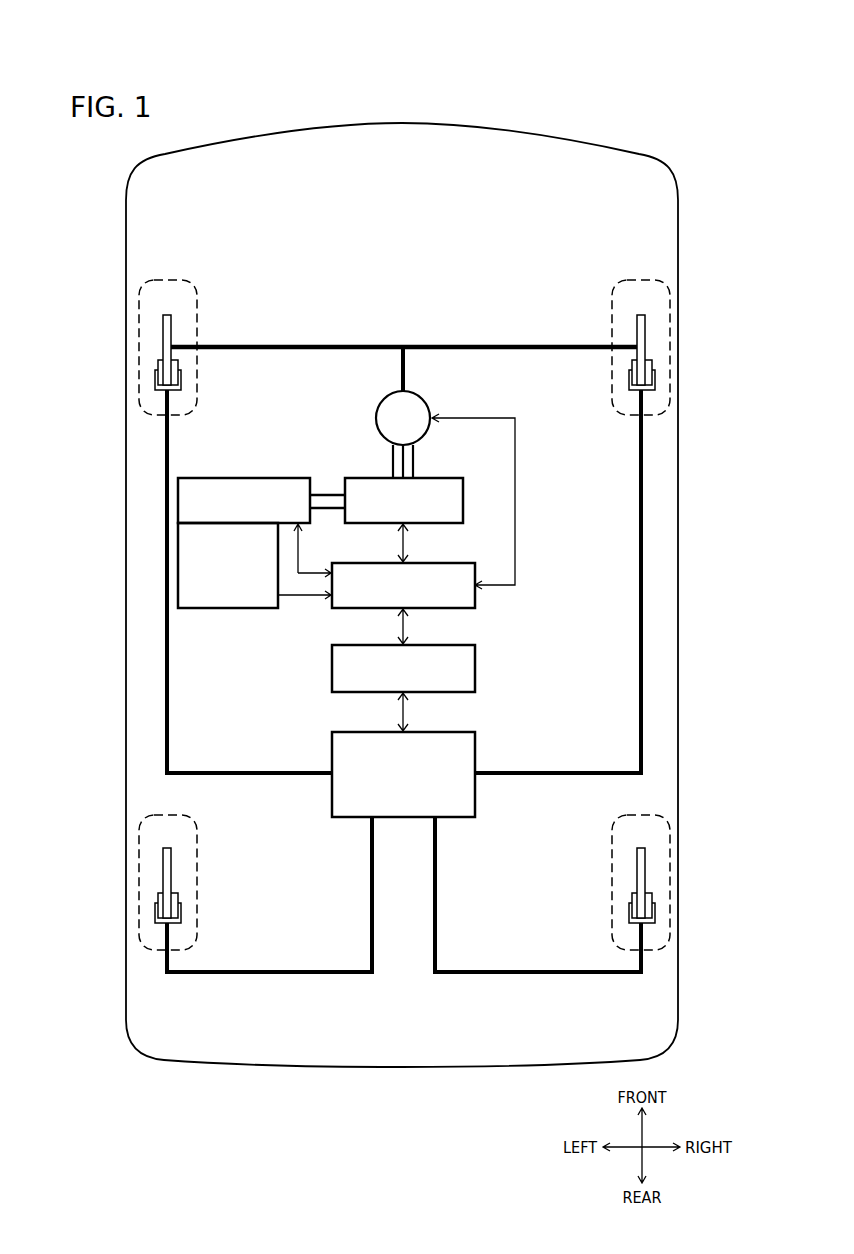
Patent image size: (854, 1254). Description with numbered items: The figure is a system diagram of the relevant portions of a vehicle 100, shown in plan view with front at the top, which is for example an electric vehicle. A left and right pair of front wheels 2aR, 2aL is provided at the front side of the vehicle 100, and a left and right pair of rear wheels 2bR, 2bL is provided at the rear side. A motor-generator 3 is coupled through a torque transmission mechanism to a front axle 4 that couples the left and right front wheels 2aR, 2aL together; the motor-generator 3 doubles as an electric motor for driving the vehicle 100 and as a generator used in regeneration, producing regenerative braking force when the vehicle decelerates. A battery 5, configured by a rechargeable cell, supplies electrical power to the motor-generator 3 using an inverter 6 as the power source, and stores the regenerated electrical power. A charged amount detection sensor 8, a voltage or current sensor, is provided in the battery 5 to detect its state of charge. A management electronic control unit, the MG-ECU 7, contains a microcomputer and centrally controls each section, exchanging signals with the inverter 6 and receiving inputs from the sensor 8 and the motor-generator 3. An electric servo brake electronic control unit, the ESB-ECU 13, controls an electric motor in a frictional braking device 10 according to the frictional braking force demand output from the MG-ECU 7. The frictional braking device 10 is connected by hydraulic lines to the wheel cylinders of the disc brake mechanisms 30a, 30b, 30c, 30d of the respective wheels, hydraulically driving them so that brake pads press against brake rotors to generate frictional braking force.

The vehicle 100 is at (636, 154).
The left front wheel 2aL is at (163, 280).
The right front wheel 2aR is at (648, 280).
The left rear wheel 2bL is at (163, 815).
The right rear wheel 2bR is at (648, 815).
The disc brake mechanism 30a is at (646, 347).
The disc brake mechanism 30b is at (163, 878).
The disc brake mechanism 30c is at (646, 878).
The disc brake mechanism 30d is at (163, 345).
The front axle 4 is at (293, 347).
The motor-generator 3 is at (426, 396).
The battery 5 is at (272, 478).
The inverter 6 is at (432, 478).
The MG-ECU 7 is at (432, 563).
The charged amount detection sensor 8 is at (237, 608).
The ESB-ECU 13 is at (436, 646).
The frictional braking device 10 is at (436, 732).